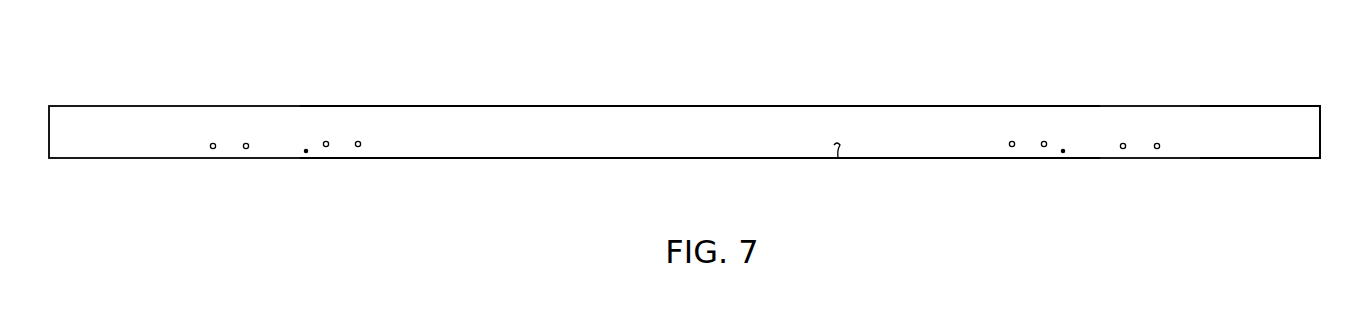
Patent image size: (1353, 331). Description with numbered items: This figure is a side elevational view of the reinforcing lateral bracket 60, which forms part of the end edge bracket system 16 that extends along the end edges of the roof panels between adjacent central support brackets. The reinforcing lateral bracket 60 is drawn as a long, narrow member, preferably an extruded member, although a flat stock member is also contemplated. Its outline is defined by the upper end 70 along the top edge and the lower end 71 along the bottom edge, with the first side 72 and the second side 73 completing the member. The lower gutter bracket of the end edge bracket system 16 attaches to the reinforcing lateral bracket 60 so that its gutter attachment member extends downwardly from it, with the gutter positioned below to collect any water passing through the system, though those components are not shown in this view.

The end edge bracket system 16 is at (833, 90).
The reinforcing lateral bracket 60 is at (273, 106).
The upper end 70 is at (686, 106).
The lower end 71 is at (663, 158).
The first side 72 is at (838, 158).
The second side 73 is at (1237, 123).